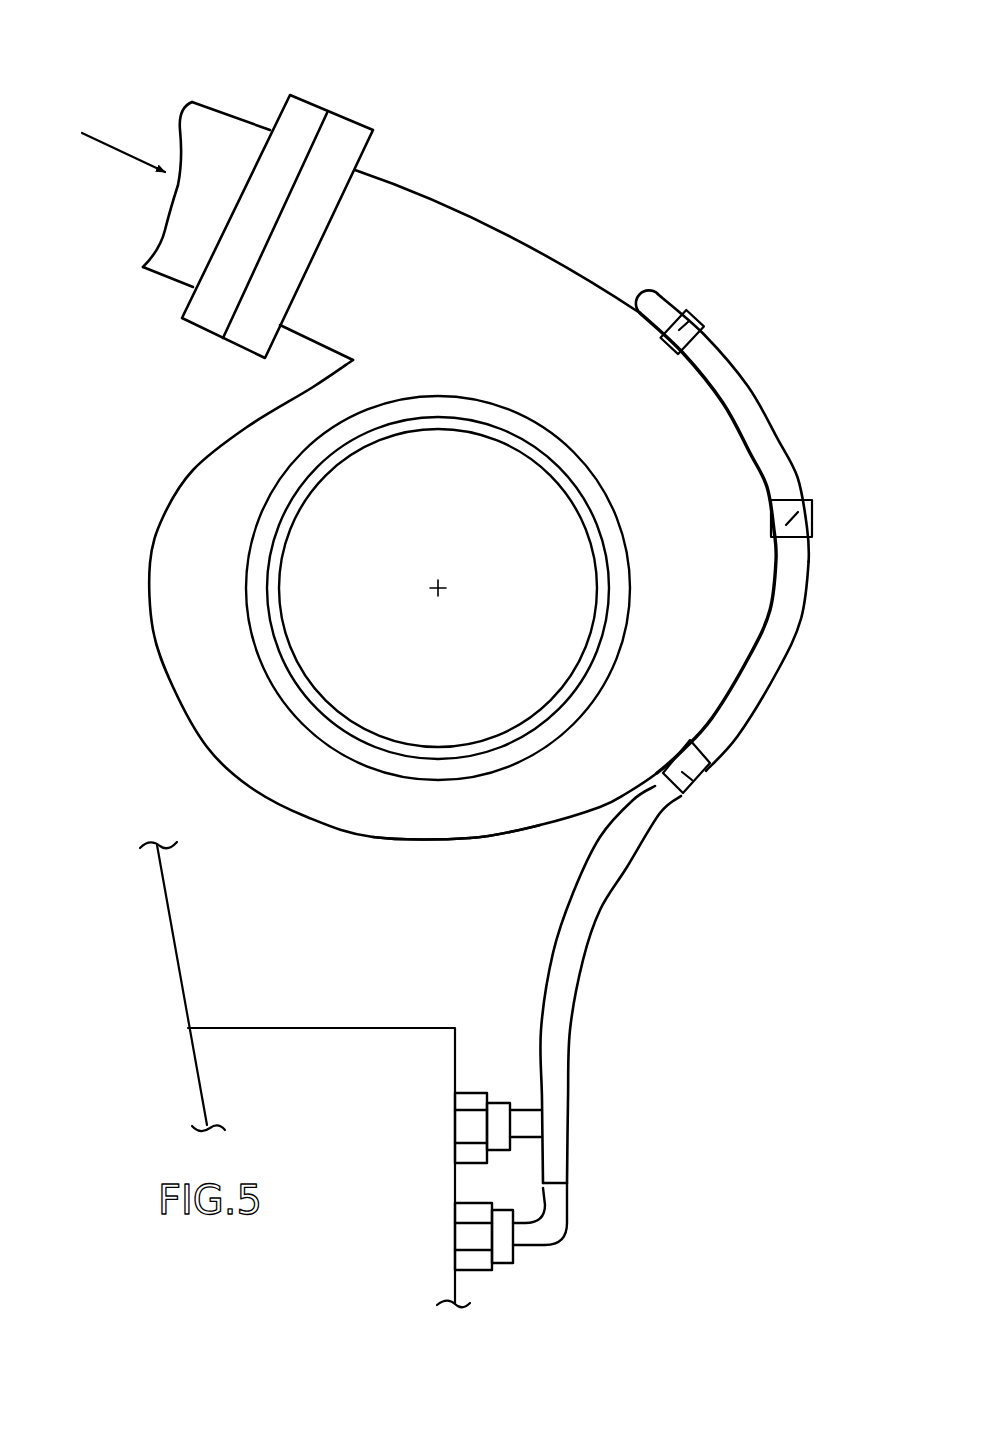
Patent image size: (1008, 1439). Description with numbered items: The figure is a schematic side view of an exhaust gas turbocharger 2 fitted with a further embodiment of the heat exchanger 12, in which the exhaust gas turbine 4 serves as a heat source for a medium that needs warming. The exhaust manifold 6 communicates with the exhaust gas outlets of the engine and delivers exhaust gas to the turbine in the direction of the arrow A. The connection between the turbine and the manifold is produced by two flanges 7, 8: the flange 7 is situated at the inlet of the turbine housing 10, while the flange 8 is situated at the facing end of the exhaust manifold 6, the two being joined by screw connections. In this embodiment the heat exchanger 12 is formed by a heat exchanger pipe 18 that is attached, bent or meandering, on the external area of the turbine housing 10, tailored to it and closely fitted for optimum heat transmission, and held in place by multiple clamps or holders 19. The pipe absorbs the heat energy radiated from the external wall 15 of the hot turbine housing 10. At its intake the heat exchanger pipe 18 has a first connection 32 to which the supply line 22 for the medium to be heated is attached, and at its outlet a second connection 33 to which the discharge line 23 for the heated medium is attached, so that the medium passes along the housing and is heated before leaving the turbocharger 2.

The exhaust gas flow direction arrow A is at (100, 133).
The exhaust gas turbocharger 2 is at (162, 450).
The exhaust gas turbine 4 is at (477, 607).
The exhaust manifold 6 is at (220, 140).
The flange 7 is at (333, 147).
The flange 8 is at (300, 120).
The turbine housing 10 is at (188, 644).
The heat exchanger 12 is at (760, 390).
The external wall 15 is at (425, 843).
The heat exchanger pipe 18 is at (757, 677).
The clamps 19 is at (697, 317).
The supply line 22 is at (477, 1260).
The discharge line 23 is at (470, 1100).
The first connection 32 is at (503, 1243).
The second connection 33 is at (497, 1140).